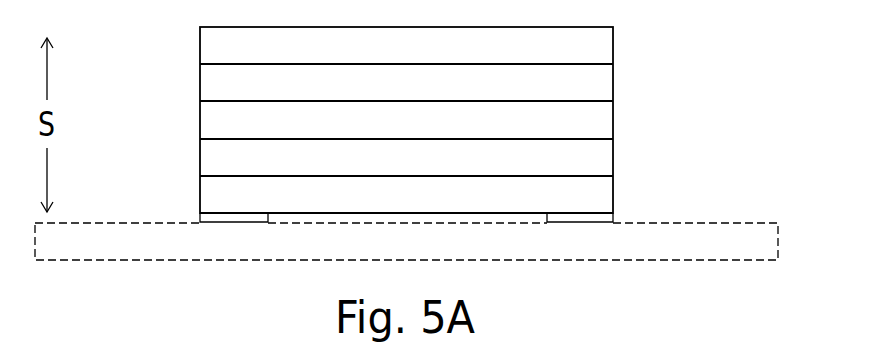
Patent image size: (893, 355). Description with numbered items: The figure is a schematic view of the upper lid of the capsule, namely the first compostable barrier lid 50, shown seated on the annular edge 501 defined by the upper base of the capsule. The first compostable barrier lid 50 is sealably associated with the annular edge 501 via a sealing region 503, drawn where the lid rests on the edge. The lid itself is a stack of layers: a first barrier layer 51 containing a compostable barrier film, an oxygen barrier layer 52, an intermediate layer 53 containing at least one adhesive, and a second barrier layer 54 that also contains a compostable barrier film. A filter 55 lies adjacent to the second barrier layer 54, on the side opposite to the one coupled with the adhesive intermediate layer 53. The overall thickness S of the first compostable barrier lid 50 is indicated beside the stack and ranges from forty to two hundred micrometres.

The first compostable barrier lid 50 is at (494, 120).
The first barrier layer 51 is at (406, 49).
The oxygen barrier layer 52 is at (406, 86).
The intermediate layer 53 is at (406, 124).
The second barrier layer 54 is at (406, 161).
The filter 55 is at (406, 198).
The sealing region 503 is at (200, 220).
The annular edge 501 is at (780, 232).